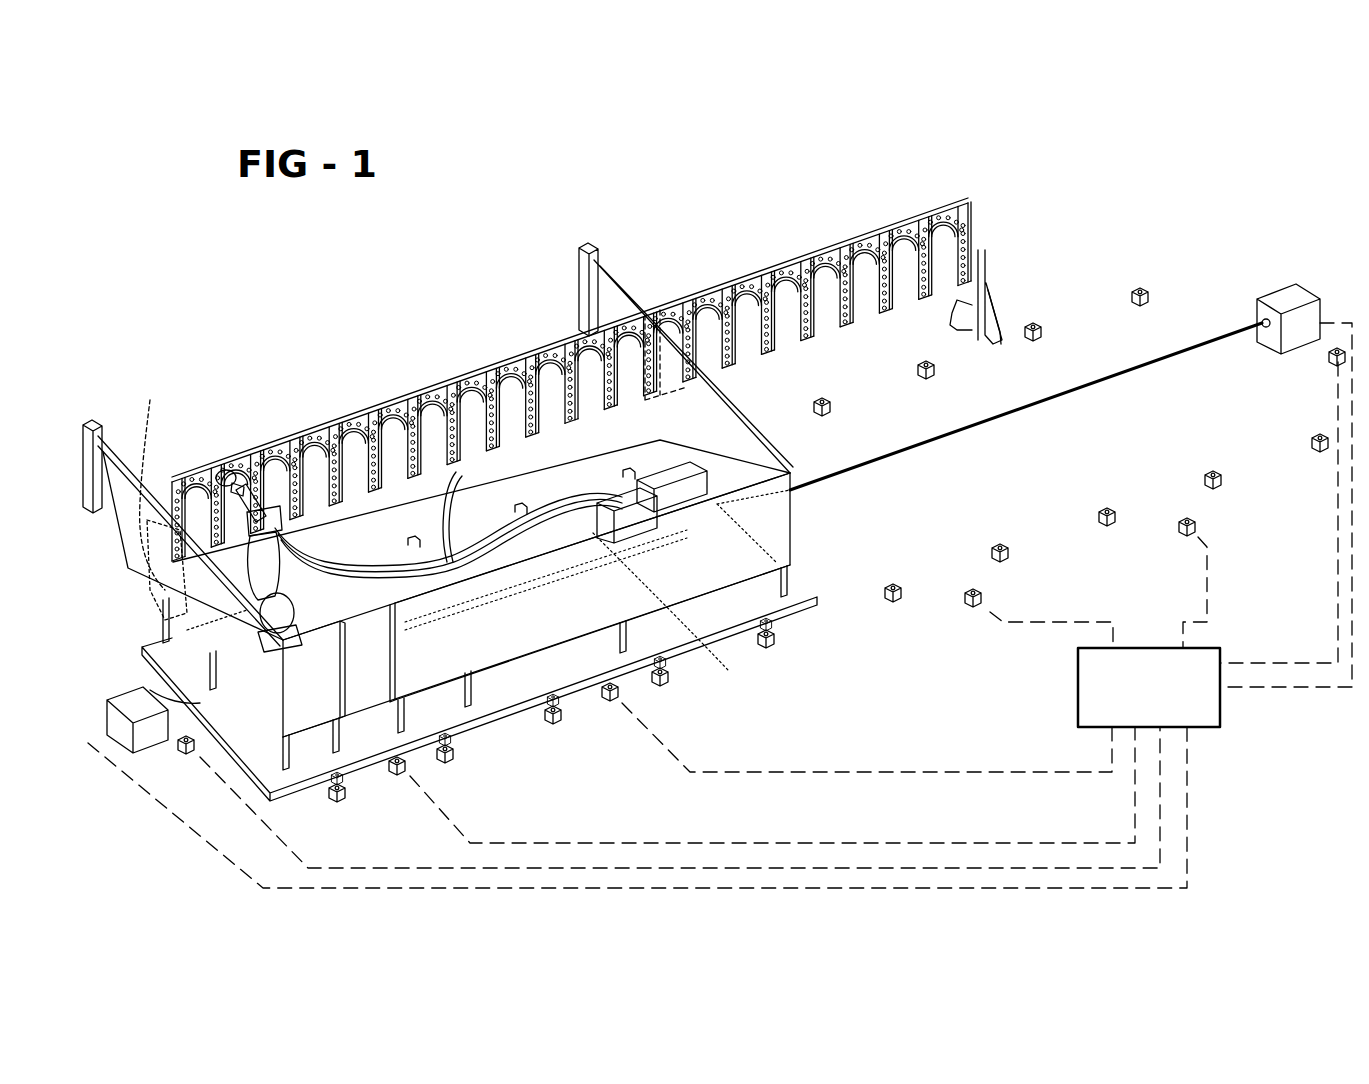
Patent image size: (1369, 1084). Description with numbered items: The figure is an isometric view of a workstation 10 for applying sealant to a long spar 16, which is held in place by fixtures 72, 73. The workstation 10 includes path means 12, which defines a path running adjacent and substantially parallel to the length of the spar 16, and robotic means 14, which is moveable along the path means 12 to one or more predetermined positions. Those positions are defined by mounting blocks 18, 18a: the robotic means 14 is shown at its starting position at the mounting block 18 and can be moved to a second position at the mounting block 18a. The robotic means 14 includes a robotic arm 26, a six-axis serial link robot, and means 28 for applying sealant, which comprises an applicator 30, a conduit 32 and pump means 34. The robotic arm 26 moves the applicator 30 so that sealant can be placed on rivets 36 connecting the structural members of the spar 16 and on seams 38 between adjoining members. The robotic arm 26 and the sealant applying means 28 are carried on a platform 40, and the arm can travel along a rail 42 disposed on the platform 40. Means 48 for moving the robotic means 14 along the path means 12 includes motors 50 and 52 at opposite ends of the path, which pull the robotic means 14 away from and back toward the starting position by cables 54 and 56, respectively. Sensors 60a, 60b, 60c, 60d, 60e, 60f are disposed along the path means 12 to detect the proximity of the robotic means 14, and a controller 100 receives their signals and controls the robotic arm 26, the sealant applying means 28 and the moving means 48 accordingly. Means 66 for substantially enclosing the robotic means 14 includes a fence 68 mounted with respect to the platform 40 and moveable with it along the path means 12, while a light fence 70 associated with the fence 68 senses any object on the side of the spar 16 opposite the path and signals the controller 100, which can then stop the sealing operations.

The workstation 10 is at (1142, 160).
The path means 12 is at (1182, 205).
The robotic means 14 is at (180, 784).
The spar 16 is at (830, 237).
The mounting block 18 is at (775, 637).
The mounting block 18a is at (1315, 447).
The robotic arm 26 is at (250, 578).
The means for applying sealant 28 is at (310, 525).
The applicator 30 is at (222, 468).
The conduit 32 is at (448, 520).
The pump means 34 is at (620, 508).
The rivets 36 is at (672, 310).
The seams 38 is at (933, 253).
The platform 40 is at (287, 792).
The rail 42 is at (691, 595).
The means for moving robotic means 48 is at (1263, 262).
The motor 50 is at (1293, 296).
The motor 52 is at (125, 712).
The cable 54 is at (1057, 397).
The cable 56 is at (150, 690).
The sensor 60a is at (183, 748).
The sensor 60b is at (405, 763).
The sensor 60c is at (622, 695).
The sensor 60d is at (970, 606).
The sensor 60e is at (1177, 527).
The sensor 60f is at (1330, 358).
The means for substantially enclosing robotic means 66 is at (858, 549).
The fence 68 is at (797, 532).
The light fence 70 is at (86, 405).
The fixture 72 is at (978, 262).
The fixture 73 is at (161, 500).
The controller 100 is at (1163, 697).